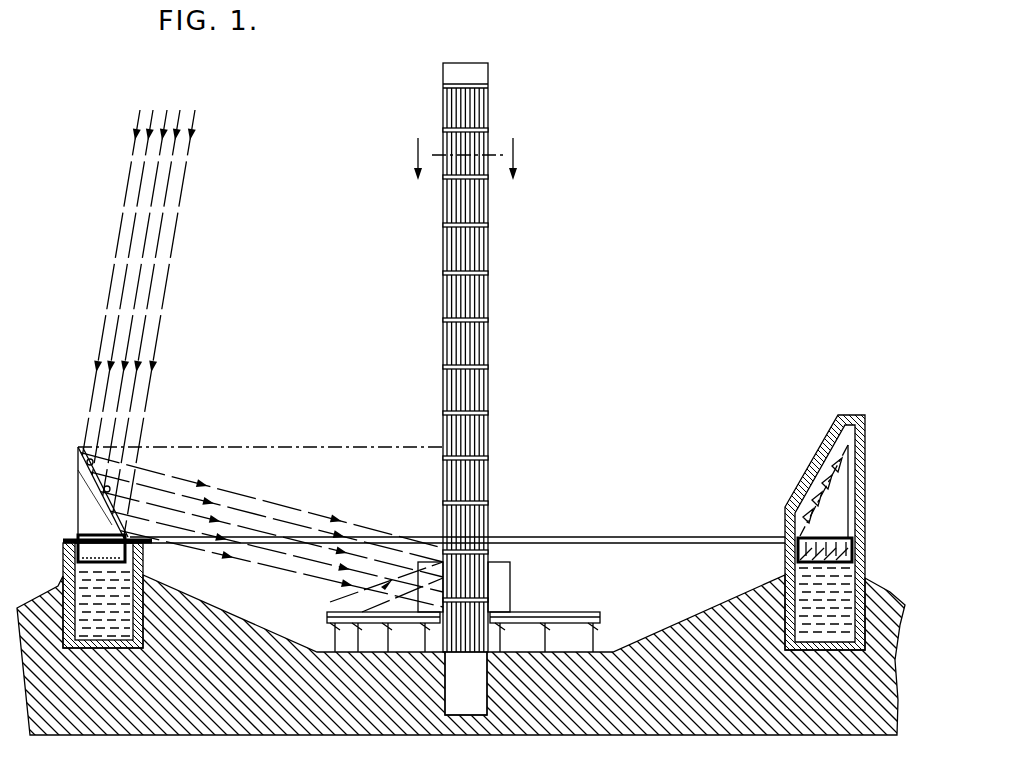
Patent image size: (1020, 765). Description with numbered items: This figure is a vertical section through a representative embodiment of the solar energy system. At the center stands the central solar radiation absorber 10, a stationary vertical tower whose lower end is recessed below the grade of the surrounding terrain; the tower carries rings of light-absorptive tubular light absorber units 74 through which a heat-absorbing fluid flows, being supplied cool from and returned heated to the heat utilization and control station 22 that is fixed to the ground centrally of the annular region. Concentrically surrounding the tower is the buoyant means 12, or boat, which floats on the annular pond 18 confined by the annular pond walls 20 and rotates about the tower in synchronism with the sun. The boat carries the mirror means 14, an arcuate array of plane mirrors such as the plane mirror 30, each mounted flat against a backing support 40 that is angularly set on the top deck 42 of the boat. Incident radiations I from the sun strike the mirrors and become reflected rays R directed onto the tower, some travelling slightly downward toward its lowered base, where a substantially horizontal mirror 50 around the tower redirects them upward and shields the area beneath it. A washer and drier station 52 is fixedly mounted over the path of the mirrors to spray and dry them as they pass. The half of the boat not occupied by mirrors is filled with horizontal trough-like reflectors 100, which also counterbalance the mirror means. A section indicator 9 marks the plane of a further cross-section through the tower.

The central solar radiation absorber 10 is at (494, 292).
The buoyant means 12 is at (68, 549).
The mirror means 14 is at (76, 452).
The annular pond 18 is at (110, 580).
The annular pond walls 20 is at (70, 590).
The heat utilization and control station 22 is at (512, 566).
The plane mirror 30 is at (96, 480).
The backing support 40 is at (92, 512).
The top deck 42 is at (80, 535).
The horizontal mirror 50 is at (572, 610).
The washer and drier station 52 is at (814, 445).
The tubular light absorber units 74 is at (466, 112).
The trough-like reflectors 100 is at (838, 545).
The section line 9- 9 is at (463, 153).
The incident radiations I is at (128, 236).
The reflected rays R is at (255, 512).